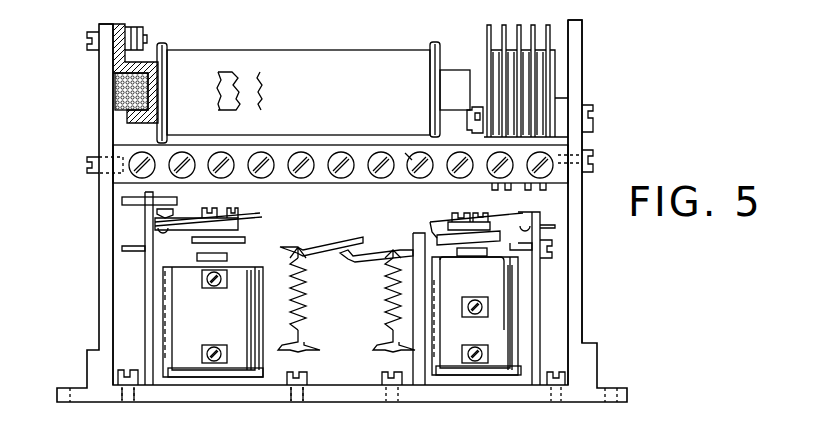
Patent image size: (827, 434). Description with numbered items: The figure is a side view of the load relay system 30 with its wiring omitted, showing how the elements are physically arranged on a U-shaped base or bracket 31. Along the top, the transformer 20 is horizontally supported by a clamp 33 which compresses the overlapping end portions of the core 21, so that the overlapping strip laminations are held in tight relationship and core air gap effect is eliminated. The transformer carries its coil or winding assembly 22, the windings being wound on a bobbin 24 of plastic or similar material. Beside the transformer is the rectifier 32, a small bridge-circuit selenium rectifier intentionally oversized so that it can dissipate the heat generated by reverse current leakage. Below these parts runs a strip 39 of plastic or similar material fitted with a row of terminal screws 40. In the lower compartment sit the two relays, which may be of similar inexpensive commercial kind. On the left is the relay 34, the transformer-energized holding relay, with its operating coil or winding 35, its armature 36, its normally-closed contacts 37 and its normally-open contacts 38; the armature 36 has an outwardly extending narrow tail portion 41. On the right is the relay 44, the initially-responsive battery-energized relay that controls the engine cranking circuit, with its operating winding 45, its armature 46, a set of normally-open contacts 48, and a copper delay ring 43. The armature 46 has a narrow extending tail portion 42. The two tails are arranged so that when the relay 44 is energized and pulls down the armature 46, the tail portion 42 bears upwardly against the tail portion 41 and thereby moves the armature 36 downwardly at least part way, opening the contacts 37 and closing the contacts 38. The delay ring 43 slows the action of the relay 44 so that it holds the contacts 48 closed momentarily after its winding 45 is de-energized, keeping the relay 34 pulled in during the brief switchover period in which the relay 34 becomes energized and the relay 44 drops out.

The transformer 20 is at (313, 44).
The core 21 is at (127, 97).
The coil or winding assembly 22 is at (387, 63).
The bobbin 24 is at (163, 50).
The load relay system 30 is at (87, 233).
The U-shaped base or bracket 31 is at (575, 82).
The rectifier 32 is at (492, 62).
The clamp 33 is at (117, 53).
The relay 34 is at (302, 362).
The operating coil or winding 35 is at (187, 360).
The armature 36 is at (247, 240).
The normally-closed contacts 37 is at (160, 210).
The normally-open contacts 38 is at (160, 233).
The strip 39 is at (403, 152).
The terminal screws 40 is at (312, 156).
The tail portion 41 is at (342, 238).
The tail portion 42 is at (390, 222).
The copper delay ring 43 is at (500, 280).
The relay 44 is at (382, 317).
The operating winding 45 is at (450, 357).
The armature 46 is at (438, 238).
The normally-open contacts 48 is at (541, 225).